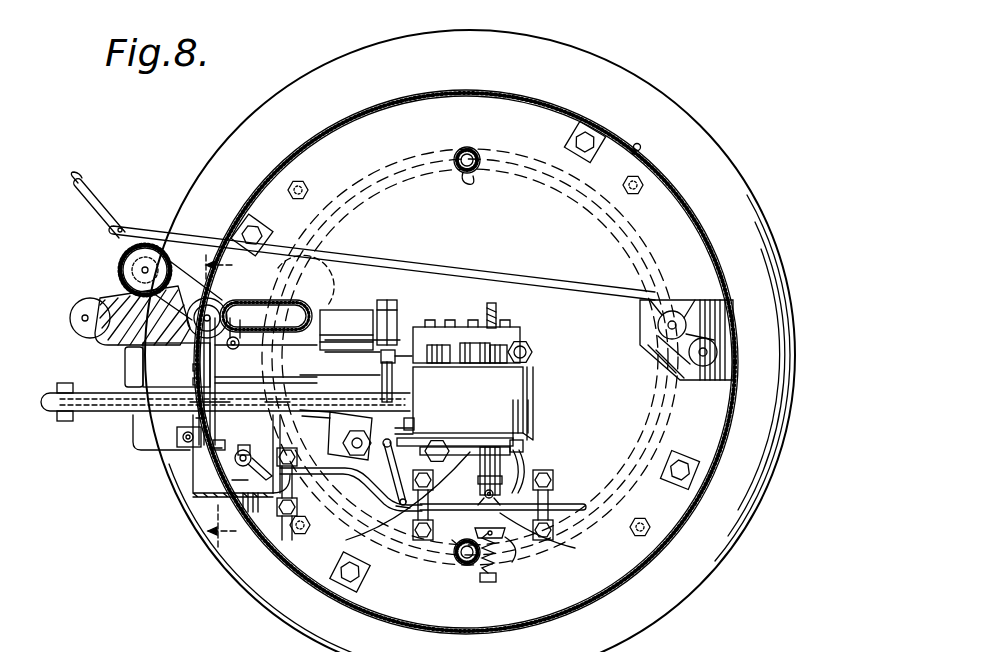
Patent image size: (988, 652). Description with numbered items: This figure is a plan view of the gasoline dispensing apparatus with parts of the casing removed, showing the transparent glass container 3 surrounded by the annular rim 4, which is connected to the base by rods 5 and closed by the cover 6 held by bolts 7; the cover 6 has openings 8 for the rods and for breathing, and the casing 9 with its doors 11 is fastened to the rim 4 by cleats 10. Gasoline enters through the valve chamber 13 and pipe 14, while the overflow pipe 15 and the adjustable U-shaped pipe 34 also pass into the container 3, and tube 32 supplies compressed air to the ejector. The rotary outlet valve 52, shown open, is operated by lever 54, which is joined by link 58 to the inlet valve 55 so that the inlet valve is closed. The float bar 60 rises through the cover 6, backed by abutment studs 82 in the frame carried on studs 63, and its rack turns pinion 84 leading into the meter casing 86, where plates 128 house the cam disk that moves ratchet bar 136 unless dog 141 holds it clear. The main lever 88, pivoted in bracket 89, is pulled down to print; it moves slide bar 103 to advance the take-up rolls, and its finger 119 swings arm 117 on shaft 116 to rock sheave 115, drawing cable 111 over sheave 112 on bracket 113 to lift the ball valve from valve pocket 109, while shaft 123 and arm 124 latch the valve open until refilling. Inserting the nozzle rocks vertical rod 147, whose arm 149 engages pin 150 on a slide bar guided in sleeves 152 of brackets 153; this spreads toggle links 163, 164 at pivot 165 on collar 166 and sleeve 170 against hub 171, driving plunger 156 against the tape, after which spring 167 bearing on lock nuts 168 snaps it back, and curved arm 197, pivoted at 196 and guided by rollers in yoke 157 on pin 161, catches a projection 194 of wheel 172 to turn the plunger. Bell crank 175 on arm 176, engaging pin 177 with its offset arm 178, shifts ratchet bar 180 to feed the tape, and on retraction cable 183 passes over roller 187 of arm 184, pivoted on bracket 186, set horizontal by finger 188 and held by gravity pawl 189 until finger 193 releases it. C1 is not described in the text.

The transparent glass container 3 is at (373, 165).
The annular rim 4 is at (704, 549).
The rods 5 is at (476, 152).
The cover 6 is at (615, 167).
The bolts 7 is at (307, 191).
The openings 8 is at (471, 184).
The casing 9 is at (703, 227).
The cleats 10 is at (574, 134).
The doors 11 is at (494, 90).
The valve chamber 13 is at (717, 346).
The pipe 14 is at (232, 401).
The overflow pipe 15 is at (306, 280).
The tube 32 is at (84, 320).
The adjustable U-shaped pipe 34 is at (282, 317).
The rotary outlet valve 52 is at (123, 272).
The lever 54 is at (97, 212).
The inlet valve 55 is at (690, 316).
The link 58 is at (463, 263).
The bar 60 is at (462, 364).
The studs 63 is at (533, 352).
The abutment studs 82 is at (483, 362).
The pinion 84 is at (497, 313).
The casing 86 is at (336, 318).
The main lever 88 is at (101, 407).
The bracket 89 is at (342, 445).
The slide bar 103 is at (400, 432).
The valve pocket 109 is at (216, 304).
The cord or cable 111 is at (132, 345).
The sheave 112 is at (199, 350).
The bracket 113 is at (216, 352).
The sheave 115 is at (198, 373).
The shaft 116 is at (136, 370).
The arm 117 is at (204, 389).
The finger 119 is at (194, 404).
The shaft 123 is at (332, 346).
The arm 124 is at (324, 375).
The plates 128 is at (389, 303).
The ratchet bar 136 is at (382, 352).
The dog 141 is at (386, 397).
The vertical rod 147 is at (245, 453).
The arm 149 is at (237, 485).
The pin 150 is at (260, 512).
The sleeves 152 is at (346, 540).
The brackets 153 is at (551, 490).
The plunger 156 is at (482, 437).
The yoke 157 is at (560, 546).
The pin 161 is at (340, 478).
The toggle links 163 is at (484, 499).
The toggle links 164 is at (490, 516).
The pivot 165 is at (488, 536).
The collar 166 is at (455, 558).
The expansile coil spring 167 is at (468, 567).
The lock nuts 168 is at (498, 577).
The sleeve 170 is at (481, 480).
The hub 171 is at (481, 460).
The wheel 172 is at (524, 410).
The bell crank 175 is at (391, 460).
The arm 176 is at (405, 443).
The pin 177 is at (402, 508).
The upwardly offset inner arm 178 is at (424, 452).
The ratchet bar 180 is at (404, 420).
The cable 183 is at (217, 452).
The arm 184 is at (200, 420).
The bracket 186 is at (222, 446).
The roller 187 is at (178, 426).
The finger 188 is at (236, 463).
The gravity pawl 189 is at (261, 404).
The finger 193 is at (331, 420).
The hook-shaped projections 194 is at (521, 447).
The pivot 196 is at (505, 555).
The curved arm 197 is at (520, 470).
The coil C1 is at (505, 362).